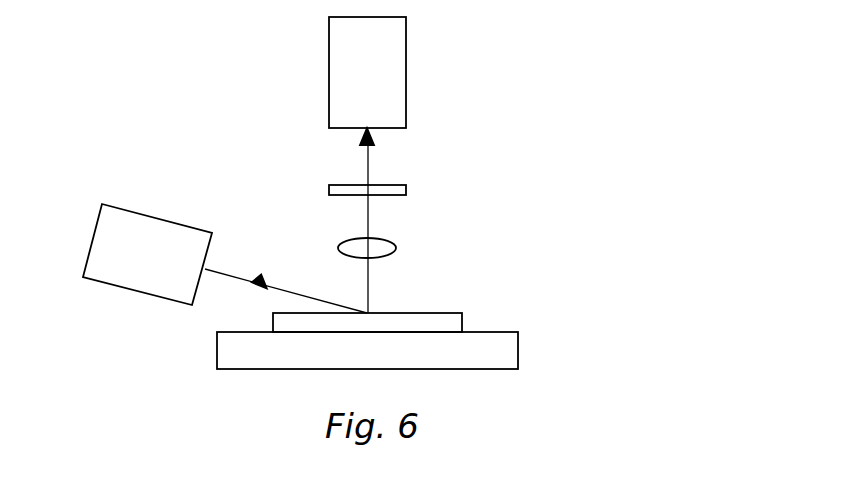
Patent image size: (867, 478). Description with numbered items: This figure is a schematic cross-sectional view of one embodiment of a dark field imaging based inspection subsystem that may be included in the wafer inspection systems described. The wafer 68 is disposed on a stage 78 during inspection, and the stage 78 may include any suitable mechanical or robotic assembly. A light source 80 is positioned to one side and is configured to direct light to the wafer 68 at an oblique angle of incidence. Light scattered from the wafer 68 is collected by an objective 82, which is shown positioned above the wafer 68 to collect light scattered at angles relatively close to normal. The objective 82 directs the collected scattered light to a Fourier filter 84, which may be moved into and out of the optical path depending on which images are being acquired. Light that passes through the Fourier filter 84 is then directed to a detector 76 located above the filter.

The detector 76 is at (329, 72).
The Fourier filter 84 is at (400, 184).
The objective 82 is at (352, 243).
The light source 80 is at (93, 237).
The wafer 68 is at (455, 313).
The stage 78 is at (520, 351).